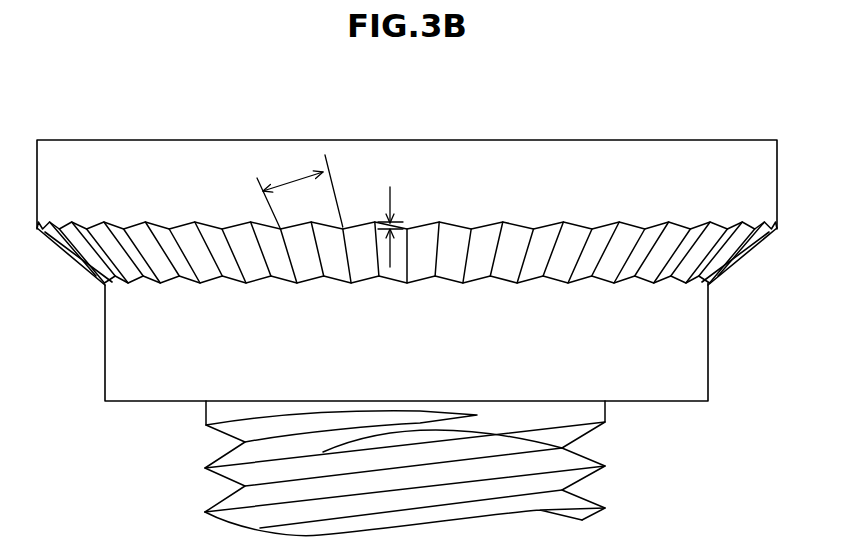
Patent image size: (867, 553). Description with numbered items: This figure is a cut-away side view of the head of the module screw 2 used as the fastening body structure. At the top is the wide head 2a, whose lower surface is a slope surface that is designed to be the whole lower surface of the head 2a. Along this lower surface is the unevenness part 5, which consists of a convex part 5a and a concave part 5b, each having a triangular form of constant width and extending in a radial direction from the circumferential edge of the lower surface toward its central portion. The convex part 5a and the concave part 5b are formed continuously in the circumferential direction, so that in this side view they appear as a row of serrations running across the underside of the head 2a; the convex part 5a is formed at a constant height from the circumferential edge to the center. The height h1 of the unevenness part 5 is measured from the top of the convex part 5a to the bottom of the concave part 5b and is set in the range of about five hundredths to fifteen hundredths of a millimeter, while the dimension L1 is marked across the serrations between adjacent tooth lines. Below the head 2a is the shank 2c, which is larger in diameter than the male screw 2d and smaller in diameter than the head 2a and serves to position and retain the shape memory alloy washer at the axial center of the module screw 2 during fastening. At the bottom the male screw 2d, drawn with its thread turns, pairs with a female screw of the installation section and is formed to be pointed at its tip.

The module screw 2 is at (695, 127).
The head 2a is at (760, 187).
The shank 2c is at (653, 339).
The male screw 2d is at (587, 482).
The unevenness part 5 is at (587, 215).
The convex part 5a is at (472, 228).
The concave part 5b is at (440, 223).
The tooth pitch L1 is at (300, 190).
The height h1 is at (402, 222).